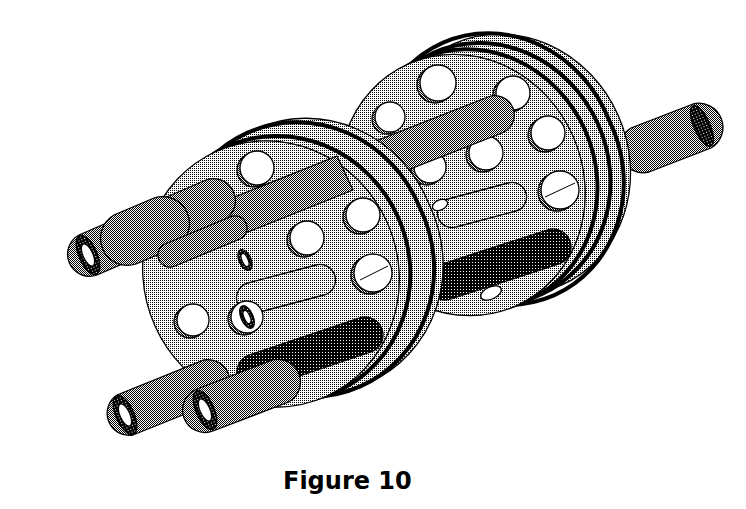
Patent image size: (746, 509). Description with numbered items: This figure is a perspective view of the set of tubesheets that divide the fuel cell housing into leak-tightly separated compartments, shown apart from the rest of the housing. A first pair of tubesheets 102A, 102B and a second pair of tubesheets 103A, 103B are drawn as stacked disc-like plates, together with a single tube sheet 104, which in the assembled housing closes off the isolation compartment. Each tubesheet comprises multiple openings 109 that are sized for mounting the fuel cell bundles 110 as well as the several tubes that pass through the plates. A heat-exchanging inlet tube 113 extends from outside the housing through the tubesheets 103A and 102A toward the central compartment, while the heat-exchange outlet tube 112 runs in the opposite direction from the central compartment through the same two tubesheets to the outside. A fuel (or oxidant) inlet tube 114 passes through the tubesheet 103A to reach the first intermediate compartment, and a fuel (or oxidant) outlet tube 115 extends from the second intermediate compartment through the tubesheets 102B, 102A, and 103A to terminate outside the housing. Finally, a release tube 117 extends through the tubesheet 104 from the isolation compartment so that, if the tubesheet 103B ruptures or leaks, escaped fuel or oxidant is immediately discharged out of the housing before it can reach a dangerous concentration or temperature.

The tubesheet 102A is at (302, 125).
The tubesheet 102B is at (395, 93).
The tubesheet 103A is at (213, 173).
The tubesheet 103B is at (450, 40).
The single tube sheet 104 is at (600, 72).
The openings 109 is at (190, 322).
The fuel cell bundles 110 is at (530, 305).
The heat-exchange outlet tube 112 is at (347, 115).
The heat-exchanging inlet tube 113 is at (200, 362).
The fuel (or oxidant) inlet tube 114 is at (147, 210).
The fuel (or oxidant) outlet tube 115 is at (453, 308).
The release tube 117 is at (666, 170).